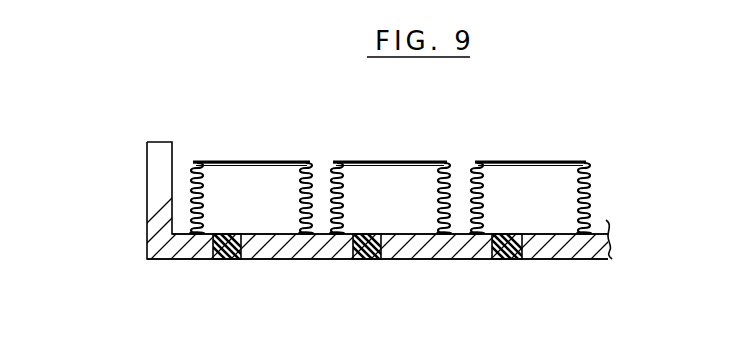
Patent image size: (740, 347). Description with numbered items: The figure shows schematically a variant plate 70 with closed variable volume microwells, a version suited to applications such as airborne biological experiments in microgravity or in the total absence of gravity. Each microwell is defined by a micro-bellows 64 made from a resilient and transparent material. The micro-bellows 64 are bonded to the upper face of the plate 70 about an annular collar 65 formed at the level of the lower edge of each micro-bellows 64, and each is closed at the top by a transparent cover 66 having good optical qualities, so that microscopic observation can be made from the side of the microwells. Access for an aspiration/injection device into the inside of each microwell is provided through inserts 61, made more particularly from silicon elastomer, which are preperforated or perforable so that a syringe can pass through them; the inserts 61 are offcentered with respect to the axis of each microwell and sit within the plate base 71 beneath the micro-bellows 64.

The plate 70 is at (133, 165).
The base plate 71 is at (443, 250).
The insert 61 is at (220, 258).
The micro-bellows 64 is at (314, 167).
The annular collar 65 is at (596, 232).
The transparent cover 66 is at (238, 158).